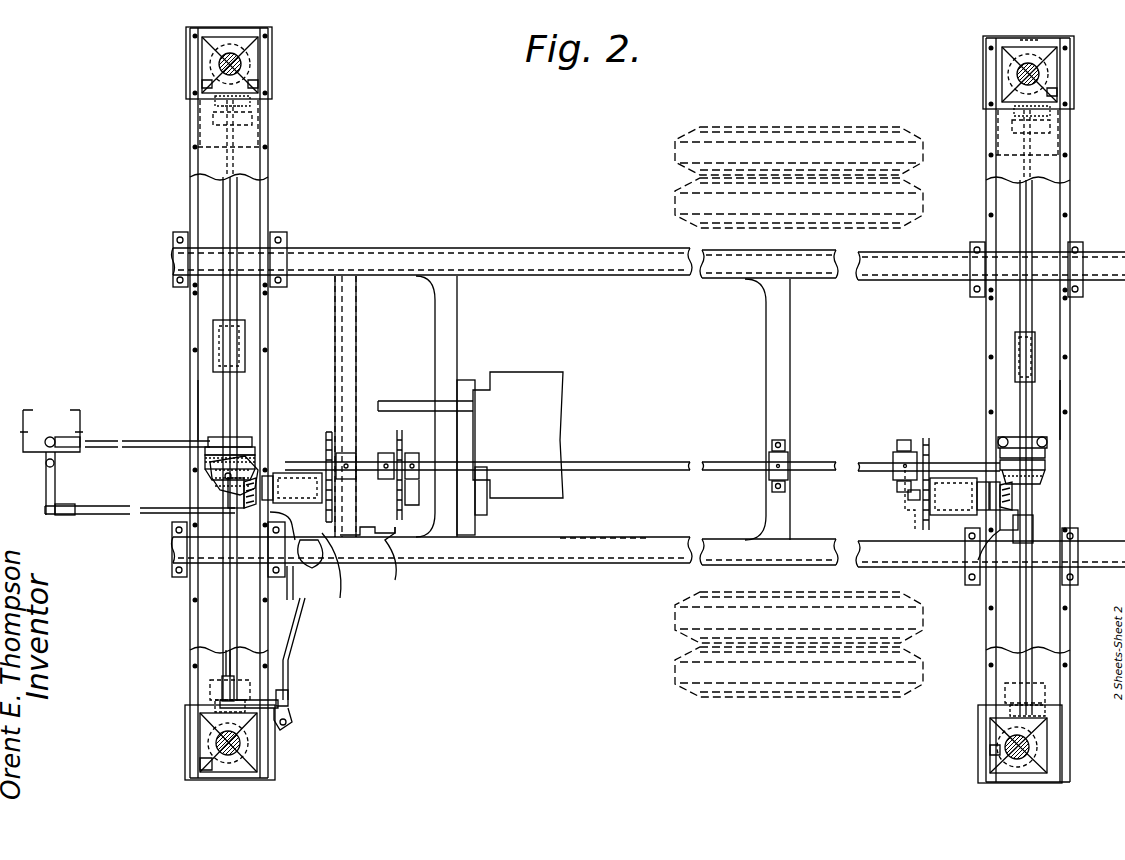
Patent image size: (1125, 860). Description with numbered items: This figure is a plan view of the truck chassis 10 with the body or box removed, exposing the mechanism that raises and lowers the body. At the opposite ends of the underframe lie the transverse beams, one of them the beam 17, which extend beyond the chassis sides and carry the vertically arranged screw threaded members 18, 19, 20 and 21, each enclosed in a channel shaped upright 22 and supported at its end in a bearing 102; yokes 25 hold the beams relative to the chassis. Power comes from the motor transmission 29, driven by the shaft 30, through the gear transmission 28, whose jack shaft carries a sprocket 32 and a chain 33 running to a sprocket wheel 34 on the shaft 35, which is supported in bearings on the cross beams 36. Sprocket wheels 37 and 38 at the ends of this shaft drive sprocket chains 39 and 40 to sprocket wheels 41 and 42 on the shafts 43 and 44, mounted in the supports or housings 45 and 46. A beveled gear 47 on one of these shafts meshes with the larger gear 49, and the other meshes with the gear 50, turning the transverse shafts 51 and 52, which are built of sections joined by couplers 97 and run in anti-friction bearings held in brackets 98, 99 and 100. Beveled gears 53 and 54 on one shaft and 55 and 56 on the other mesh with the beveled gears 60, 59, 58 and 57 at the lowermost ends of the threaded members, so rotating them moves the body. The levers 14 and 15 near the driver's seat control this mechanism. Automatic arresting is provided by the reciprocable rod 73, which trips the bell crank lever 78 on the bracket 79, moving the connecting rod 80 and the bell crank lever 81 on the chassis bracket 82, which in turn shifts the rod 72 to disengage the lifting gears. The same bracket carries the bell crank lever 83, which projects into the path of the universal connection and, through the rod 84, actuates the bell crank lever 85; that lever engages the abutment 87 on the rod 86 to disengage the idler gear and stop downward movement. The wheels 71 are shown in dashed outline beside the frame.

The chassis 10 is at (600, 540).
The lever 14 is at (50, 437).
The lever 15 is at (46, 460).
The transverse beam 17 is at (1070, 620).
The screw threaded member 18 is at (258, 777).
The screw threaded member 19 is at (242, 62).
The screw threaded member 20 is at (1030, 740).
The screw threaded member 21 is at (1040, 74).
The channel shaped upright 22 is at (1074, 50).
The yoke 25 is at (283, 245).
The gear transmission 28 is at (476, 520).
The motor transmission 29 is at (548, 440).
The shaft 30 is at (398, 402).
The sprocket 32 is at (395, 580).
The chain 33 is at (402, 448).
The sprocket wheel 34 is at (412, 480).
The shaft 35 is at (666, 460).
The cross beam 36 is at (357, 331).
The sprocket wheel 37 is at (326, 450).
The sprocket wheel 38 is at (928, 446).
The sprocket chain 39 is at (350, 482).
The sprocket chain 40 is at (905, 515).
The sprocket wheel 41 is at (345, 520).
The sprocket wheel 42 is at (958, 515).
The shaft 43 is at (288, 476).
The shaft 44 is at (955, 485).
The support or housing 45 is at (316, 568).
The support or housing 46 is at (978, 560).
The beveled gear 47 is at (228, 492).
The gear 49 is at (210, 478).
The gear 50 is at (1047, 482).
The transverse shaft 51 is at (238, 382).
The transverse shaft 52 is at (1032, 310).
The beveled gear 53 is at (215, 705).
The beveled gear 54 is at (262, 86).
The beveled gear 55 is at (1060, 97).
The beveled gear 56 is at (1040, 710).
The beveled gear 57 is at (992, 750).
The beveled gear 58 is at (1030, 44).
The beveled gear 59 is at (202, 80).
The beveled gear 60 is at (205, 750).
The wheels 71 is at (905, 665).
The rod 72 is at (108, 514).
The reciprocable rod 73 is at (290, 727).
The bell crank lever 78 is at (290, 712).
The bracket 79 is at (288, 700).
The connecting rod 80 is at (296, 610).
The bell crank lever 81 is at (342, 570).
The bracket 82 is at (305, 585).
The bell crank lever 83 is at (220, 715).
The rod 84 is at (232, 578).
The bell crank lever 85 is at (245, 437).
The rod 86 is at (148, 441).
The abutment 87 is at (252, 444).
The coupler 97 is at (246, 335).
The bracket 98 is at (250, 688).
The bracket 99 is at (200, 415).
The bracket 100 is at (253, 119).
The bearing 102 is at (222, 45).